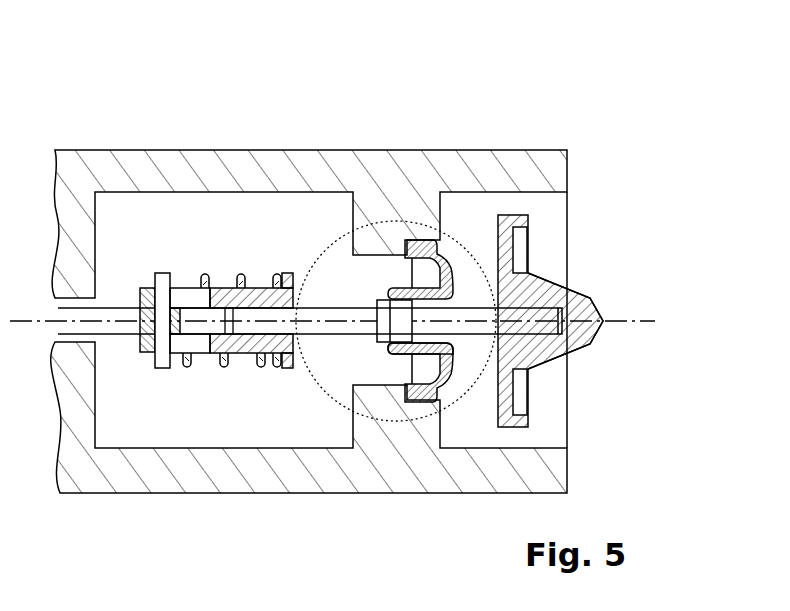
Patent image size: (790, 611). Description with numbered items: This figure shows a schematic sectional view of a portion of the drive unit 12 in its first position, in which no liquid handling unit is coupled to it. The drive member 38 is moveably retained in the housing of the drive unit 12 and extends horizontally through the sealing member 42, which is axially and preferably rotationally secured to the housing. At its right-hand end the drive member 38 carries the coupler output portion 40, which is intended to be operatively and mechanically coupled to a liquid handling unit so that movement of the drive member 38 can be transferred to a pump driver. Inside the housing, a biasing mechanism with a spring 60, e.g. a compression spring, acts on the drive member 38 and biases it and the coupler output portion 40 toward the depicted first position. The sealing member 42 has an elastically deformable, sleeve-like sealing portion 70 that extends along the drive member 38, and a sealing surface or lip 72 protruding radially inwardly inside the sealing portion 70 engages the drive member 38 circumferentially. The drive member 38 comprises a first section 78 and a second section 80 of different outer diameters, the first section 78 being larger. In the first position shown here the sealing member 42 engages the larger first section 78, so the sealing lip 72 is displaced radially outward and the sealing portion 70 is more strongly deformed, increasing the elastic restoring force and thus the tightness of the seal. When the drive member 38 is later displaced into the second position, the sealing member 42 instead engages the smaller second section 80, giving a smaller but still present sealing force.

The drive unit 12 is at (432, 157).
The drive member 38 is at (327, 315).
The coupler output portion 40 is at (588, 328).
The sealing member 42 is at (437, 248).
The spring 60 is at (207, 277).
The sealing portion 70 is at (392, 342).
The sealing surface or lip 72 is at (413, 345).
The first section 78 is at (395, 315).
The second section 80 is at (463, 316).